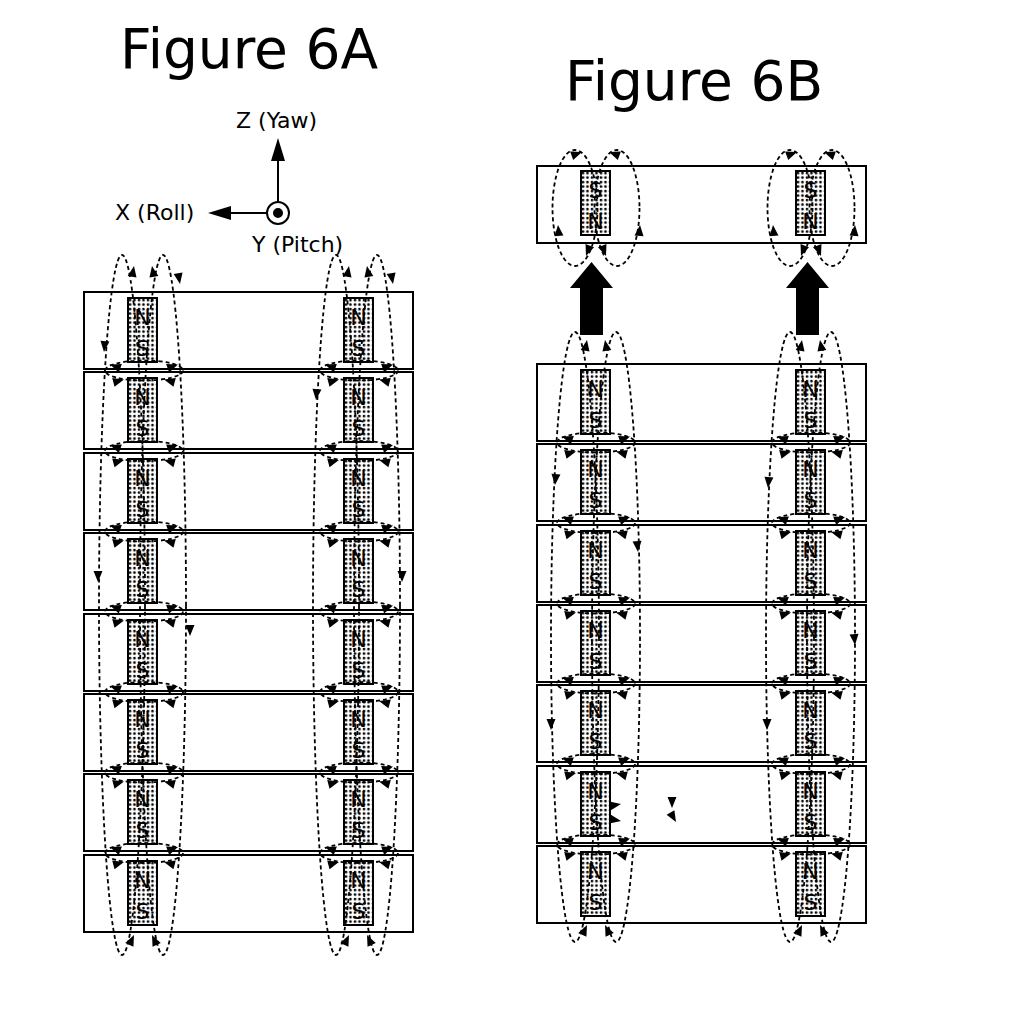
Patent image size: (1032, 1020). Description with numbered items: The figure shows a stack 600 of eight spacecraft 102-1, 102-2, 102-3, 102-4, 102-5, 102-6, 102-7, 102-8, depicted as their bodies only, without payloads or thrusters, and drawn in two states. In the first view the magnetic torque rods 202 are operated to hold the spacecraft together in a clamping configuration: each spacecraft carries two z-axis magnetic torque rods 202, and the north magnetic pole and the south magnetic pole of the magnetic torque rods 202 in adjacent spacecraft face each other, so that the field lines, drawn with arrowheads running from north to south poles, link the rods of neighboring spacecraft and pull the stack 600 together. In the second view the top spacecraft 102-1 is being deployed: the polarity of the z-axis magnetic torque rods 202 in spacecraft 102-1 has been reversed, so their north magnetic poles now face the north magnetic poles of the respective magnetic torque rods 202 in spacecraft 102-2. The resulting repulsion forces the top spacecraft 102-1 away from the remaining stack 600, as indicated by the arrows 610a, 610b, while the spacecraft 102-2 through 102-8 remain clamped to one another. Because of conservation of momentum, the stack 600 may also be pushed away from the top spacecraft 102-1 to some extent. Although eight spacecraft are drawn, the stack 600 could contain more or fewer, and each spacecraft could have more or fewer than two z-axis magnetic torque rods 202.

In FIG. 6A, the spacecraft 102-1 is at (216, 330).
In FIG. 6B, the spacecraft 102-1 is at (671, 204).
In FIG. 6A, the spacecraft 102-2 is at (216, 410).
In FIG. 6B, the spacecraft 102-2 is at (671, 402).
In FIG. 6A, the spacecraft 102-3 is at (216, 491).
In FIG. 6B, the spacecraft 102-3 is at (671, 482).
In FIG. 6A, the spacecraft 102-4 is at (216, 571).
In FIG. 6B, the spacecraft 102-4 is at (671, 563).
In FIG. 6A, the spacecraft 102-5 is at (216, 652).
In FIG. 6B, the spacecraft 102-5 is at (671, 643).
In FIG. 6A, the spacecraft 102-6 is at (216, 732).
In FIG. 6B, the spacecraft 102-6 is at (671, 723).
In FIG. 6A, the spacecraft 102-7 is at (216, 812).
In FIG. 6B, the spacecraft 102-7 is at (671, 804).
In FIG. 6A, the spacecraft 102-8 is at (216, 893).
In FIG. 6B, the spacecraft 102-8 is at (671, 884).
In FIG. 6A, the magnetic torque rod 202 is at (128, 409).
In FIG. 6B, the magnetic torque rod 202 is at (826, 203).
In FIG. 6A, the stack 600 is at (102, 248).
In FIG. 6B, the stack 600 is at (542, 342).
In FIG. 6B, the arrow 610a is at (606, 302).
In FIG. 6B, the arrow 610b is at (822, 302).